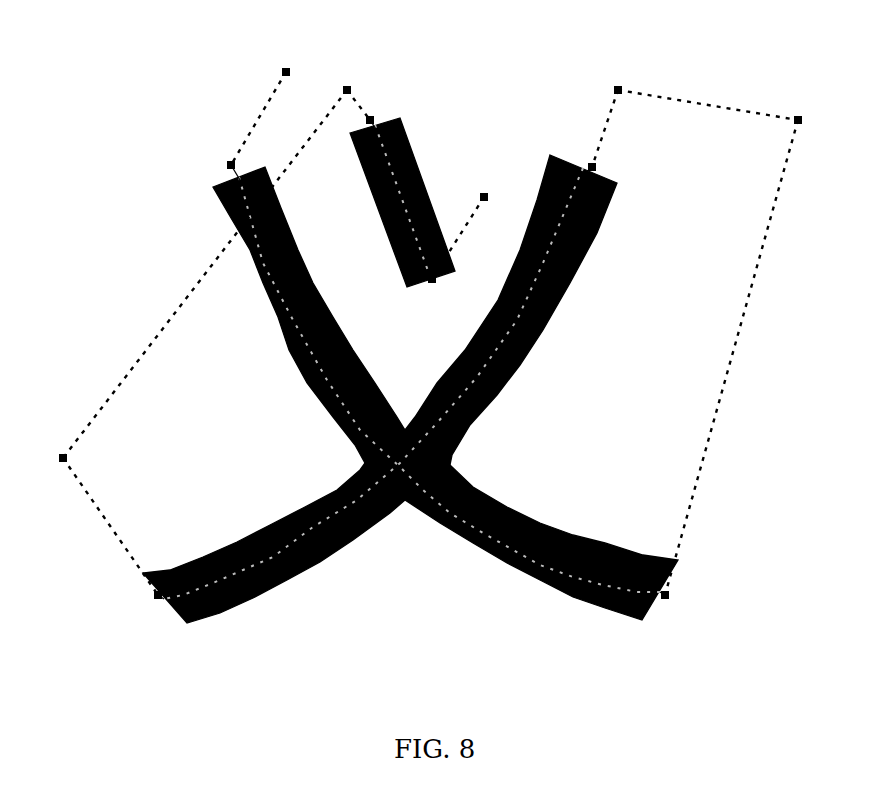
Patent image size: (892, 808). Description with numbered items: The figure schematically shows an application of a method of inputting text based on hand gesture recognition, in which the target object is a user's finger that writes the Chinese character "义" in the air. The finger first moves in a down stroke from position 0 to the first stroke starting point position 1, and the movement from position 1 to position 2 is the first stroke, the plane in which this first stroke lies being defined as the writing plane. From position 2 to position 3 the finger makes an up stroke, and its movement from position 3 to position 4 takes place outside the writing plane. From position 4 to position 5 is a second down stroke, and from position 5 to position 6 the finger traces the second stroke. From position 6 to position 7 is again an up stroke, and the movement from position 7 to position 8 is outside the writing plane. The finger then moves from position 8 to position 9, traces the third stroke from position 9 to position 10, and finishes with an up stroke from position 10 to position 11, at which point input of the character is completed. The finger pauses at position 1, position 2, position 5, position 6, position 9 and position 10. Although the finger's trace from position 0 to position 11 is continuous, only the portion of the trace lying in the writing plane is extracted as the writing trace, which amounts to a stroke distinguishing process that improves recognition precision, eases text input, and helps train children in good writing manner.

The position 0 is at (264, 101).
The first stroke starting point position 1 is at (216, 162).
The position 2 is at (676, 605).
The position 3 is at (752, 352).
The position 4 is at (695, 108).
The position 5 is at (609, 165).
The position 6 is at (160, 613).
The position 7 is at (94, 522).
The position 8 is at (216, 252).
The position 9 is at (381, 114).
The position 10 is at (438, 290).
The position 11 is at (474, 221).